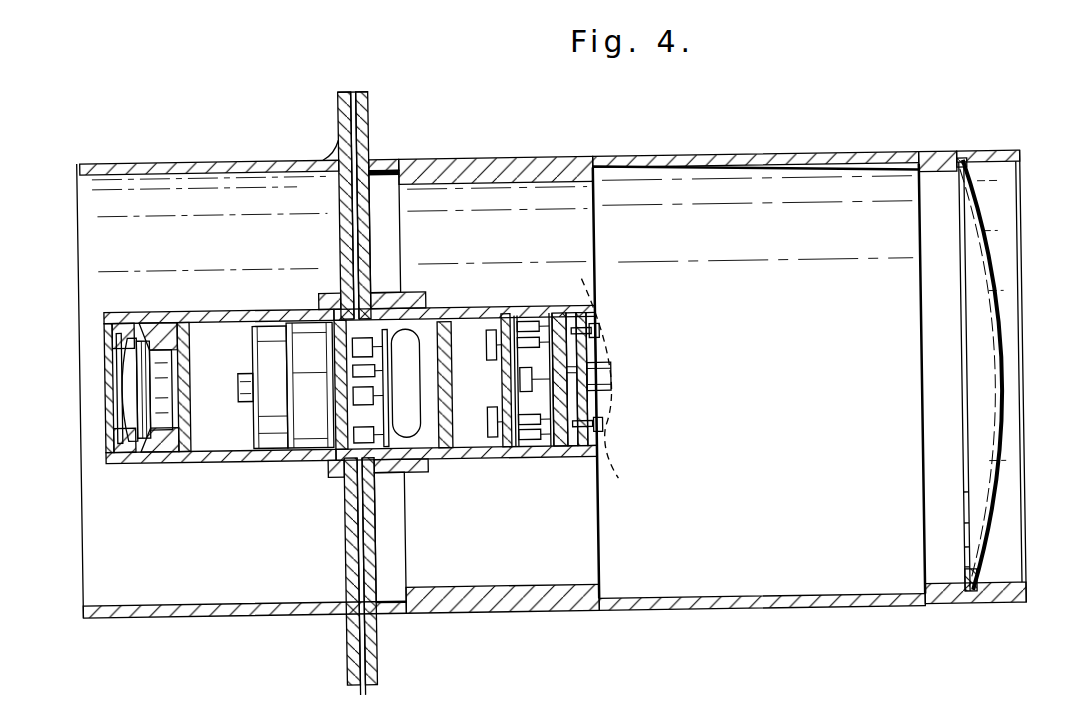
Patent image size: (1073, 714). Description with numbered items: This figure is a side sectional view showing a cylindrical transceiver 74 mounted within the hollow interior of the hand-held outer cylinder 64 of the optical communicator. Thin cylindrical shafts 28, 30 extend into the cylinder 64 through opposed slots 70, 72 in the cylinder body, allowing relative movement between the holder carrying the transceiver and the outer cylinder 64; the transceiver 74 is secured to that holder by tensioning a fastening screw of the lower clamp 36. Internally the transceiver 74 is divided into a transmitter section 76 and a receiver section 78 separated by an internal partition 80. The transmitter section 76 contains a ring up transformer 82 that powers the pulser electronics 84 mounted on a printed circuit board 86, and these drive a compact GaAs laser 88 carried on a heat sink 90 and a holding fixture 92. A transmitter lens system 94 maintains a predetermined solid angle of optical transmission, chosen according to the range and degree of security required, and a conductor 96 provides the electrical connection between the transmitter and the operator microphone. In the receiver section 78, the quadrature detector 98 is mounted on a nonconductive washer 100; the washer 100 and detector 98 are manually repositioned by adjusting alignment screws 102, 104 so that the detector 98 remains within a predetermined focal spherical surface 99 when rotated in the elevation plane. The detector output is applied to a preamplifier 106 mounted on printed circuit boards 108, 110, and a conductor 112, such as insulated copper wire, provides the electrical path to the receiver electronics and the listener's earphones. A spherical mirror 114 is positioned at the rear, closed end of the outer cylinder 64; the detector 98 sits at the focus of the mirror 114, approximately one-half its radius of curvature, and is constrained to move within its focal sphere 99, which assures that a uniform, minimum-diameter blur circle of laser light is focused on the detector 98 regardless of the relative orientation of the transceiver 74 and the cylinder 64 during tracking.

The thin cylindrical shaft 28 is at (343, 218).
The thin cylindrical shaft 30 is at (378, 580).
The lower clamp 36 is at (397, 474).
The outer cylinder 64 is at (562, 170).
The slot 70 is at (338, 166).
The slot 72 is at (344, 618).
The transceiver 74 is at (180, 314).
The transmitter section 76 is at (235, 512).
The receiver section 78 is at (511, 514).
The internal partition 80 is at (452, 446).
The ring up transformer 82 is at (416, 345).
The pulser electronics 84 is at (402, 290).
The printed circuit board 86 is at (330, 470).
The GaAs laser 88 is at (238, 402).
The heat sink 90 is at (264, 332).
The holding fixture 92 is at (308, 455).
The transmitter lens system 94 is at (124, 415).
The conductor 96 is at (364, 695).
The quadrature detector 98 is at (612, 372).
The focal spherical surface 99 is at (612, 478).
The nonconductive washer 100 is at (594, 300).
The alignment screw 102 is at (612, 312).
The alignment screw 104 is at (600, 428).
The preamplifier 106 is at (554, 446).
The printed circuit board 108 is at (487, 412).
The printed circuit board 110 is at (569, 446).
The conductor 112 is at (352, 92).
The spherical mirror 114 is at (992, 384).